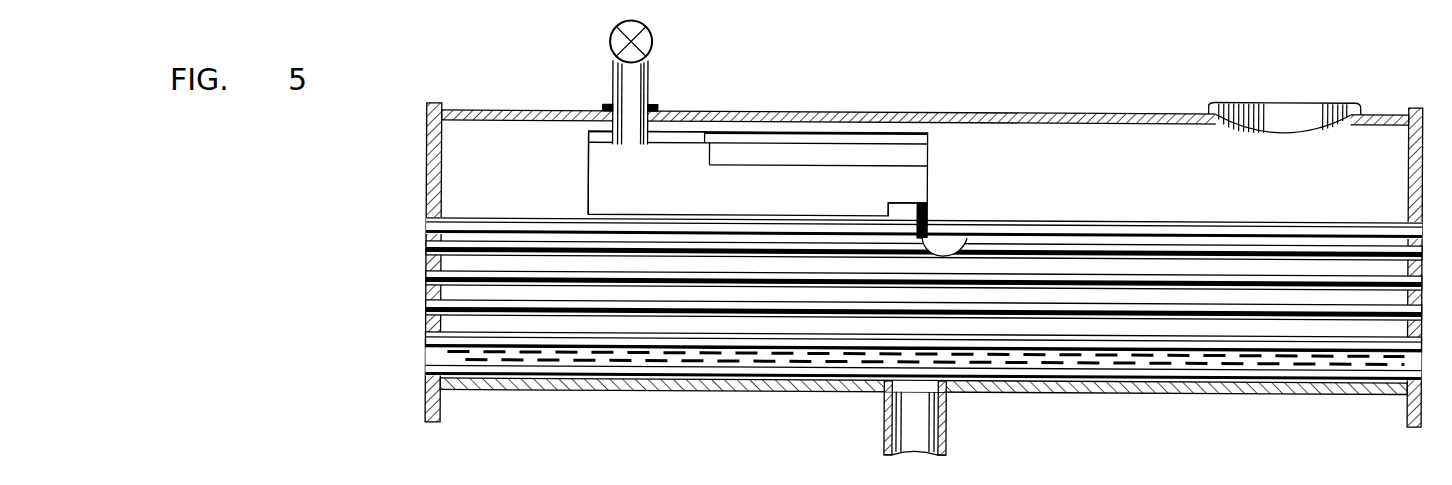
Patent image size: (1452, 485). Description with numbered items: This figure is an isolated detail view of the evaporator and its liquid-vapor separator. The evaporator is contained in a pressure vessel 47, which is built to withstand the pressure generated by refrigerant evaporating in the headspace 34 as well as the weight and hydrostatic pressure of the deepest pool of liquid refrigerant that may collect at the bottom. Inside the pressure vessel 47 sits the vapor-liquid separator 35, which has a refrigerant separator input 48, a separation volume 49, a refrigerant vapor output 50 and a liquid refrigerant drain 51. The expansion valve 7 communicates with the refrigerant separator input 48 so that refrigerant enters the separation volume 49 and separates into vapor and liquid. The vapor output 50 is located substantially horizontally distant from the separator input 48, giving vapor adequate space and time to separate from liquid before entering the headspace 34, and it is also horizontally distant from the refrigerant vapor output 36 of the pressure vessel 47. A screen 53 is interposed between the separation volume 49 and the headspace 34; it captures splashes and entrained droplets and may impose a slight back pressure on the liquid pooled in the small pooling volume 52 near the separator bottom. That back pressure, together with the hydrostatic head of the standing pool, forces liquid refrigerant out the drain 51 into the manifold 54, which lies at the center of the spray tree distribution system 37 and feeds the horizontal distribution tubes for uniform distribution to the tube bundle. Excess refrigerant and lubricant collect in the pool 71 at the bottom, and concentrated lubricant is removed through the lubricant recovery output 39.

The expansion valve 7 is at (652, 38).
The refrigerant separator input 48 is at (642, 93).
The refrigerant vapor output 50 is at (786, 133).
The screen 53 is at (885, 137).
The refrigerant vapor output 36 is at (1288, 100).
The headspace 34 is at (1266, 183).
The spray tree distribution system 37 is at (1160, 219).
The pressure vessel 47 is at (426, 216).
The vapor-liquid separator 35 is at (588, 190).
The separation volume 49 is at (734, 205).
The pooling volume 52 is at (888, 206).
The liquid refrigerant drain 51 is at (928, 214).
The manifold 54 is at (932, 262).
The pool 71 is at (1138, 362).
The lubricant recovery output 39 is at (885, 431).